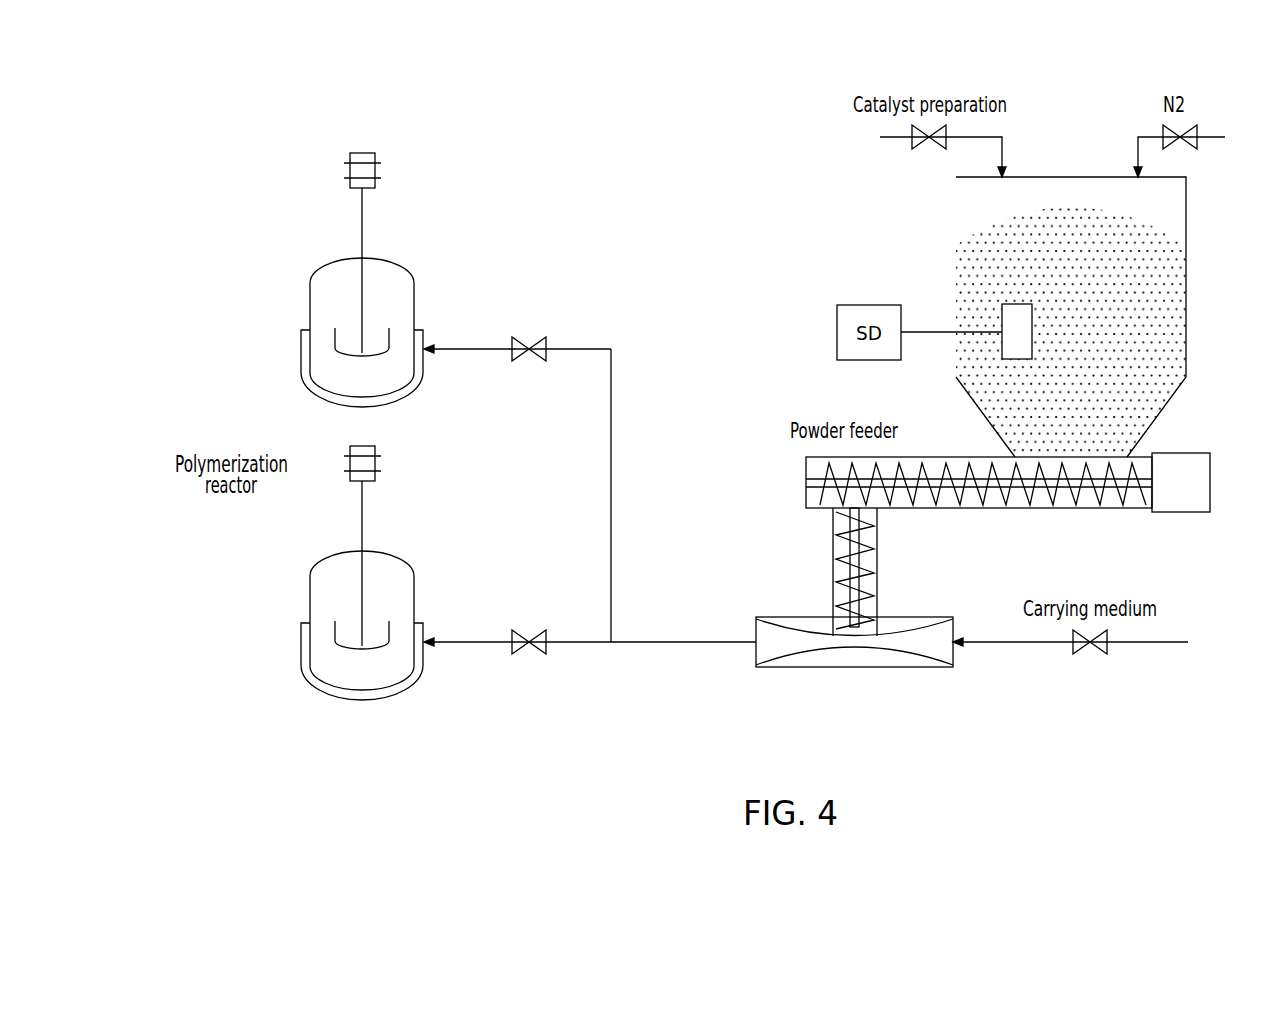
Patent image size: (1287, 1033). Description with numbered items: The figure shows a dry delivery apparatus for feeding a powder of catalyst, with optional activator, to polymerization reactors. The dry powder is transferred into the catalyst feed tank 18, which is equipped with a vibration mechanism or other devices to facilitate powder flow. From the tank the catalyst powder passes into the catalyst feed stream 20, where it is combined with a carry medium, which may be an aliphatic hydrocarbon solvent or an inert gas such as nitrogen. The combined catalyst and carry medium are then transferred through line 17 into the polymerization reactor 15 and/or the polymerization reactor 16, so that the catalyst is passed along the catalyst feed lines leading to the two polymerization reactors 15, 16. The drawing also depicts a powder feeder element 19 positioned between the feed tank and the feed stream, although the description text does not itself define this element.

The polymerization reactor 15 is at (398, 268).
The polymerization reactor 16 is at (390, 685).
The line 17 is at (653, 645).
The catalyst feed tank 18 is at (1058, 207).
The screw powder feeder 19 is at (947, 510).
The catalyst feed stream 20 is at (860, 667).